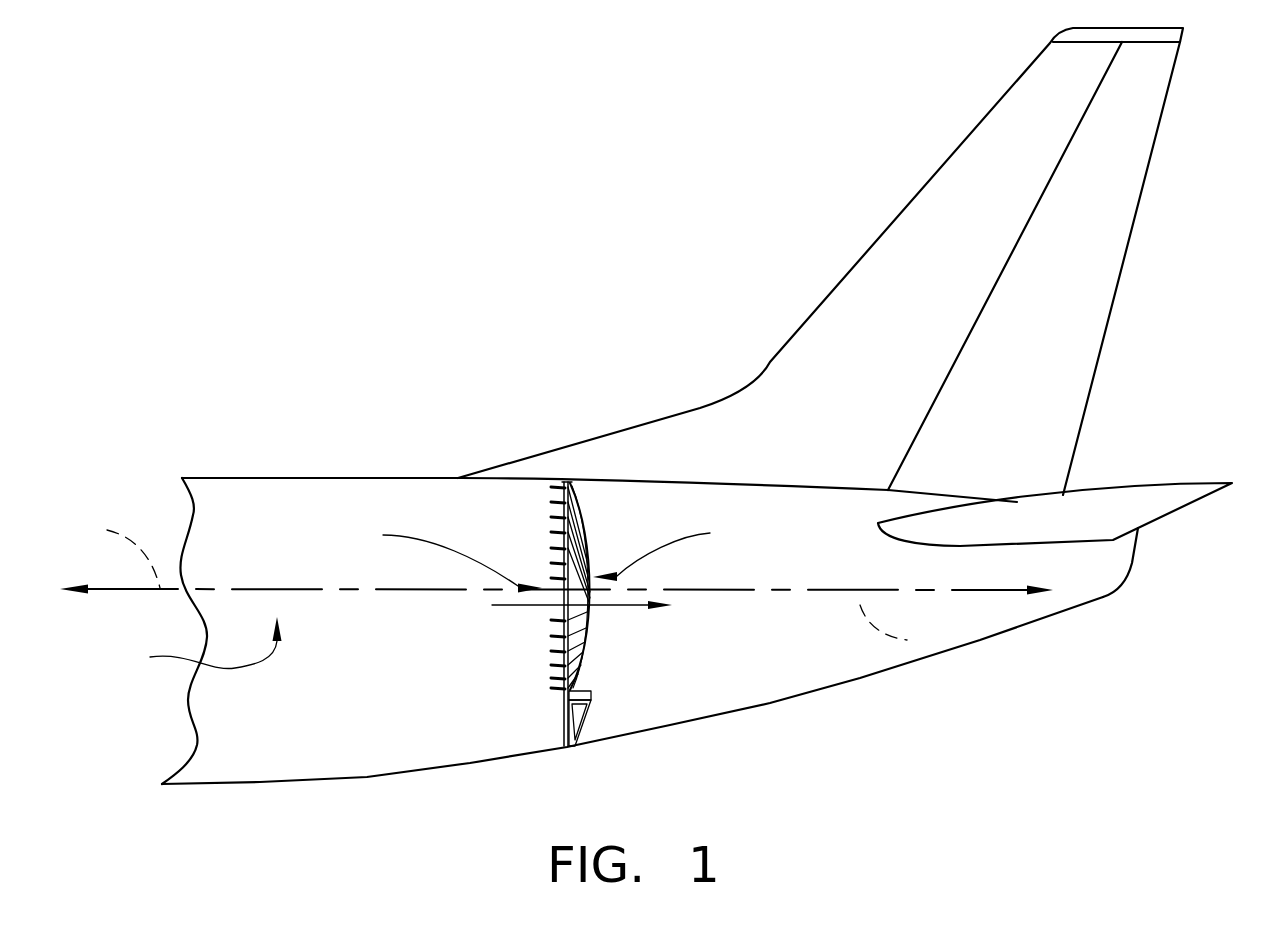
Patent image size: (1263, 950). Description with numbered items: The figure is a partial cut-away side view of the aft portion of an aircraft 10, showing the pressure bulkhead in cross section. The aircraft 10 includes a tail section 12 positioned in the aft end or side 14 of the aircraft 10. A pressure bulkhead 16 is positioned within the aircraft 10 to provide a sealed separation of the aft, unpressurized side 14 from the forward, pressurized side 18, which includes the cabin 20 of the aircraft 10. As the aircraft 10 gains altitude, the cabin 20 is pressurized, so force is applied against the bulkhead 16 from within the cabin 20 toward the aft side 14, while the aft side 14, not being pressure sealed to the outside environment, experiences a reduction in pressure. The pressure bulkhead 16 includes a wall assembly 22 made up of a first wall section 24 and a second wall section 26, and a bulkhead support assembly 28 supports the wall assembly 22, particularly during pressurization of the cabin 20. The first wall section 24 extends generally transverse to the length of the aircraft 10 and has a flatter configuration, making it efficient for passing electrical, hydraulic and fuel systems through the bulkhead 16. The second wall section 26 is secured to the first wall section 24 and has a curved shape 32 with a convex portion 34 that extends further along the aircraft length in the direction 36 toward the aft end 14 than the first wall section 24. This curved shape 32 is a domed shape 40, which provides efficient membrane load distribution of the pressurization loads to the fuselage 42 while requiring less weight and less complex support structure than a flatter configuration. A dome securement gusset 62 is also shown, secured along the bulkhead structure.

The aircraft 10 is at (632, 549).
The tail section 12 is at (1135, 414).
The aft end or unpressurized side 14 is at (797, 576).
The pressure bulkhead 16 is at (503, 655).
The forward or pressurized side 18 is at (390, 637).
The cabin 20 is at (194, 644).
The wall assembly 22 is at (441, 557).
The first wall section 24 is at (570, 712).
The second wall section 26 is at (590, 620).
The bulkhead support assembly 28 is at (612, 718).
The curved shape 32 is at (587, 547).
The convex portion 34 is at (669, 551).
The direction toward the aft end 36 is at (620, 606).
The domed shape 40 is at (611, 671).
The fuselage 42 is at (400, 465).
The dome securement gusset 62 is at (575, 540).